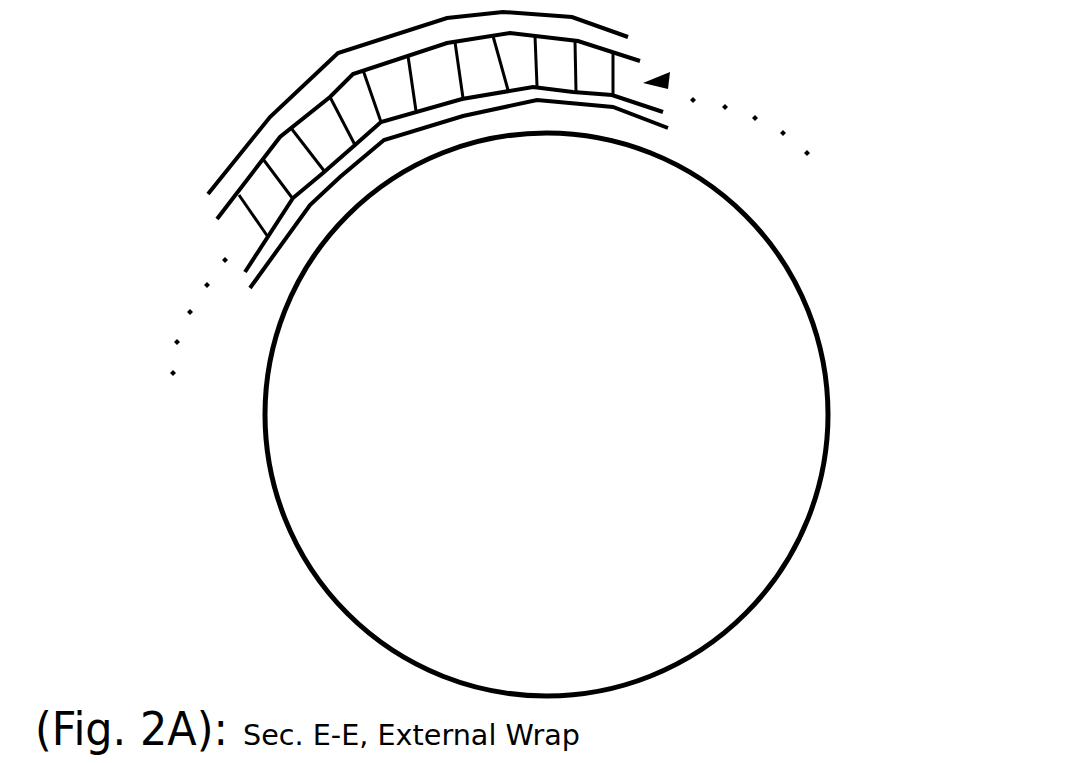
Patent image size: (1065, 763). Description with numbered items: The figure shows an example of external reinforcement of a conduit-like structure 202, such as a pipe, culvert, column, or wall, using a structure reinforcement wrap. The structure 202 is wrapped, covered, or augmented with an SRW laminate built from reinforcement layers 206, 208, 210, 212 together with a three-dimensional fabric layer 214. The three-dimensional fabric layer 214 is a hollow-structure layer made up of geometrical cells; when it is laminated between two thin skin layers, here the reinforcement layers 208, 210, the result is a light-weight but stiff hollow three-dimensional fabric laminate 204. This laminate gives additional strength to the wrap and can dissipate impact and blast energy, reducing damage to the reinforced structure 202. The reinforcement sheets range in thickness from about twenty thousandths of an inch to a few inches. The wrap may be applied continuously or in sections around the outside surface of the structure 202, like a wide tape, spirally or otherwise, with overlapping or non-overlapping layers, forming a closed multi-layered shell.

The structure 202 is at (800, 448).
The 3D fabric laminate 204 is at (672, 78).
The reinforcement layer 206 is at (203, 195).
The reinforcement layer 208 is at (217, 227).
The reinforcement layer 210 is at (653, 105).
The reinforcement layer 212 is at (640, 127).
The 3D fabric layer 214 is at (440, 82).